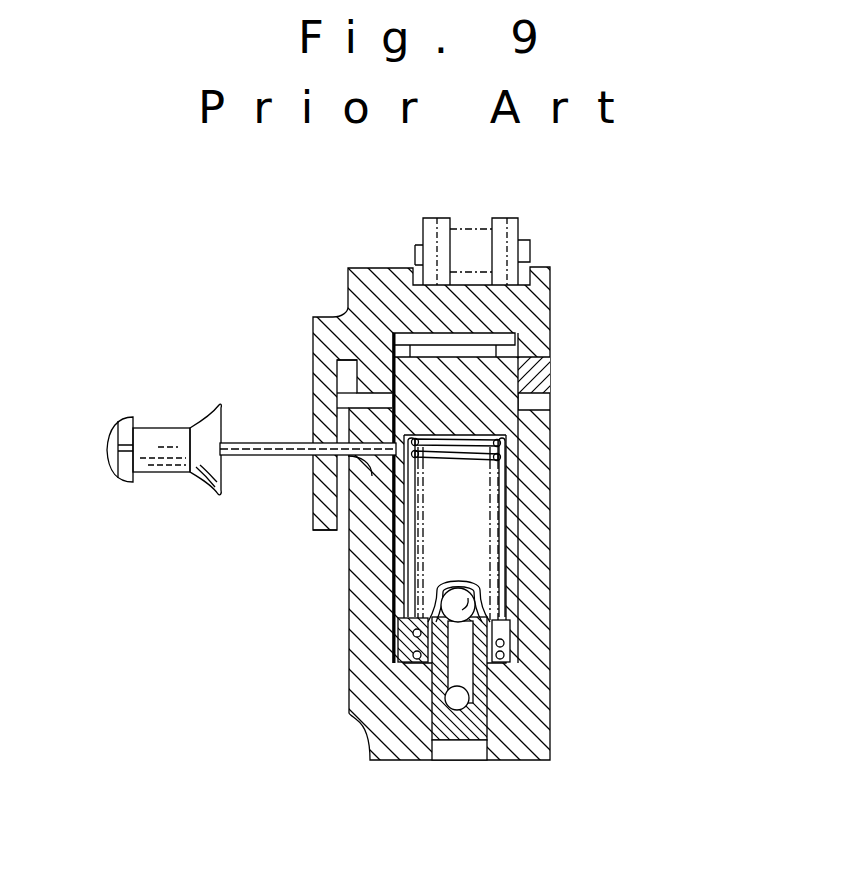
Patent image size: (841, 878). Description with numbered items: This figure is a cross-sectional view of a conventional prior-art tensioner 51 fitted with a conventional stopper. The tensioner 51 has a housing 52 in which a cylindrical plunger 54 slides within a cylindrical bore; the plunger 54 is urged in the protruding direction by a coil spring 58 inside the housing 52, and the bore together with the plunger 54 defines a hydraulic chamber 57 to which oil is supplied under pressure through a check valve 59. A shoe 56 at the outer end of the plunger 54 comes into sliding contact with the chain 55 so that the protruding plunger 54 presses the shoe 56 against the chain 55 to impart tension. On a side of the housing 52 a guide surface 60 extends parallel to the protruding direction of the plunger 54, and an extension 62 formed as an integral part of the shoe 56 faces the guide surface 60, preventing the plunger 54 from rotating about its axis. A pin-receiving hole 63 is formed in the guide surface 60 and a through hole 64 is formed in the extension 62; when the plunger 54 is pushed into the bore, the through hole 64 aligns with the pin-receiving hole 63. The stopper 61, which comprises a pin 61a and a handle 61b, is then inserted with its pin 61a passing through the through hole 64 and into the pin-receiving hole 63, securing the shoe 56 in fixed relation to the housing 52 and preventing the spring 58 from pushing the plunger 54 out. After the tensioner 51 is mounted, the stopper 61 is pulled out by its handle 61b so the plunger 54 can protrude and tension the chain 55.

The tensioner 51 is at (552, 265).
The housing 52 is at (528, 692).
The cylindrical plunger 54 is at (493, 397).
The chain 55 is at (465, 227).
The shoe 56 is at (372, 278).
The hydraulic chamber 57 is at (467, 540).
The coil spring 58 is at (507, 457).
The check valve 59 is at (428, 623).
The guide surface 60 is at (318, 526).
The stopper 61 is at (167, 513).
The pin 61a is at (250, 453).
The handle 61b is at (157, 460).
The extension 62 is at (320, 392).
The pin-receiving hole 63 is at (343, 503).
The through hole 64 is at (322, 430).